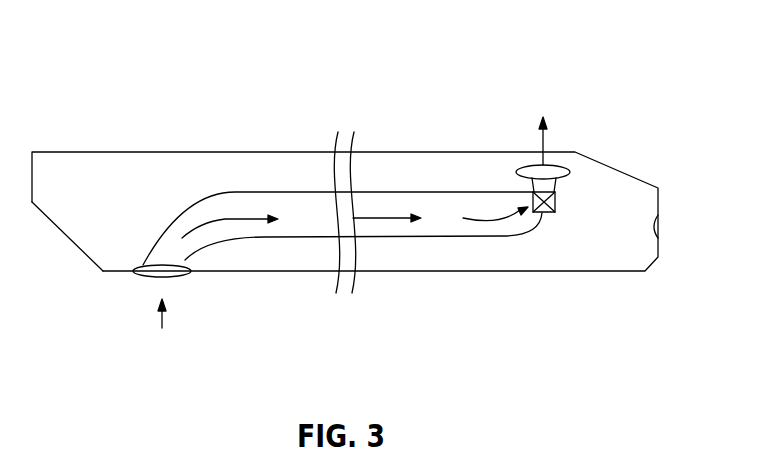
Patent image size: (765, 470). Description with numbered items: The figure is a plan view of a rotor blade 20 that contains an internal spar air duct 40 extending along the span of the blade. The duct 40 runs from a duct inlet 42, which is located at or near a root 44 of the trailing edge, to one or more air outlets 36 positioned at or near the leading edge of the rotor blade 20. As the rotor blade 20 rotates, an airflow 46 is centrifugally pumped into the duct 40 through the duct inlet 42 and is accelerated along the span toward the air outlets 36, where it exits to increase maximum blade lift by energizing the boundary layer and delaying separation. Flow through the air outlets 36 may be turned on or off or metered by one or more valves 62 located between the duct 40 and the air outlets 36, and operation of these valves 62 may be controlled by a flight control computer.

The rotor blade 20 is at (127, 50).
The air outlets 36 is at (533, 168).
The internal spar air duct 40 is at (282, 191).
The duct inlet 42 is at (143, 278).
The root 44 is at (70, 240).
The airflow 46 is at (402, 218).
The valves 62 is at (557, 200).